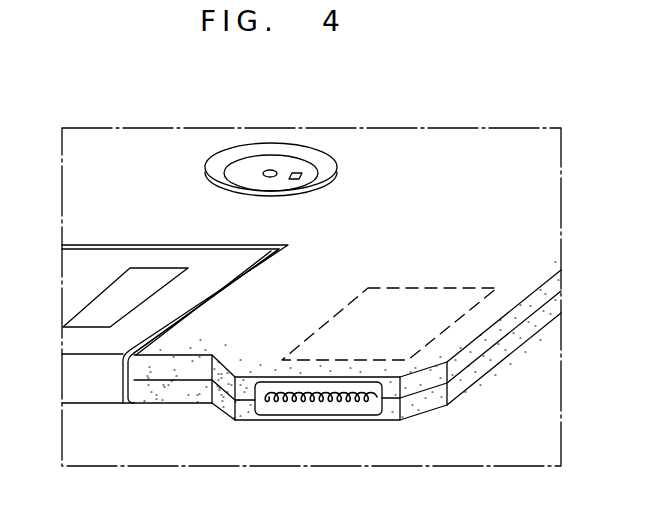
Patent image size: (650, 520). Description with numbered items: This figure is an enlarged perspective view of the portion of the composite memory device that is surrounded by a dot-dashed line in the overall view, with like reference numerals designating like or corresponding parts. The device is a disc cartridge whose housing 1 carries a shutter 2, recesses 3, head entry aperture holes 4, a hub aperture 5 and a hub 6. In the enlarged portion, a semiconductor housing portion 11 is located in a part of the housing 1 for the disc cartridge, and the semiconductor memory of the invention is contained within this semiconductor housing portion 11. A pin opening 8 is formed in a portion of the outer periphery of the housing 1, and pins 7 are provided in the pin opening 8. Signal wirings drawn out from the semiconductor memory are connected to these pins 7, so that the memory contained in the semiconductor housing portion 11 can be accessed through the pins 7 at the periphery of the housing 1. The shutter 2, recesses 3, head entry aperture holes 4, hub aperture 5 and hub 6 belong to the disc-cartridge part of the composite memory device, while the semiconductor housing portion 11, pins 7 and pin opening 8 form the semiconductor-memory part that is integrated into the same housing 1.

The housing 1 is at (540, 261).
The shutter 2 is at (181, 254).
The recesses 3 is at (246, 268).
The head entry aperture holes 4 is at (125, 275).
The hub aperture 5 is at (328, 150).
The hub 6 is at (257, 163).
The pins 7 is at (361, 398).
The pin opening 8 is at (282, 412).
The semiconductor housing portion 11 is at (466, 287).